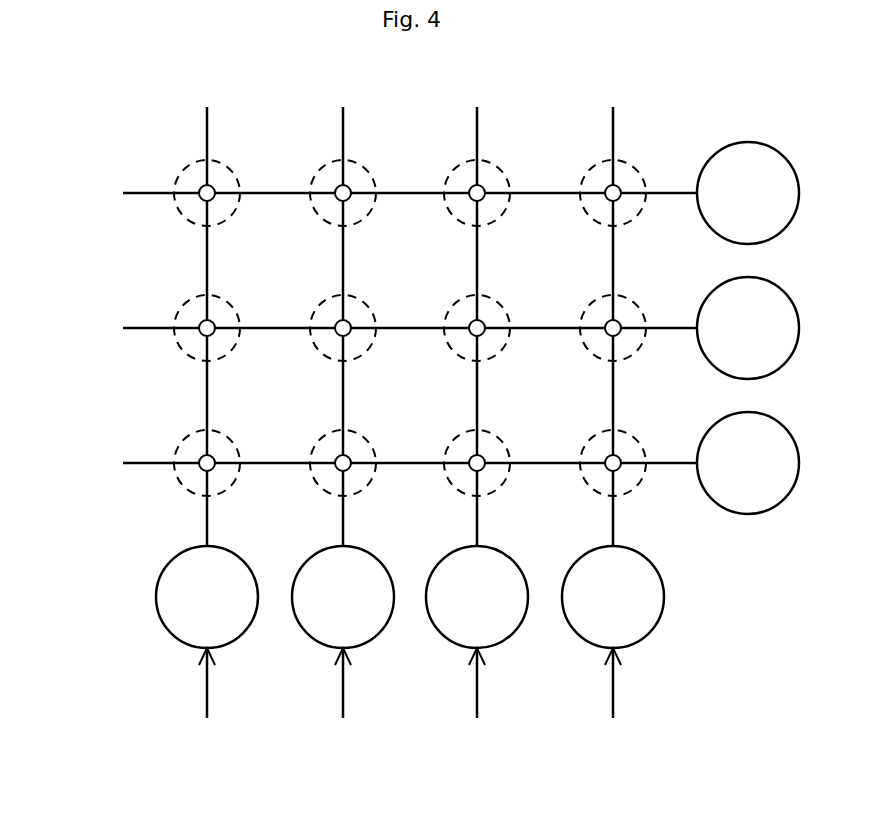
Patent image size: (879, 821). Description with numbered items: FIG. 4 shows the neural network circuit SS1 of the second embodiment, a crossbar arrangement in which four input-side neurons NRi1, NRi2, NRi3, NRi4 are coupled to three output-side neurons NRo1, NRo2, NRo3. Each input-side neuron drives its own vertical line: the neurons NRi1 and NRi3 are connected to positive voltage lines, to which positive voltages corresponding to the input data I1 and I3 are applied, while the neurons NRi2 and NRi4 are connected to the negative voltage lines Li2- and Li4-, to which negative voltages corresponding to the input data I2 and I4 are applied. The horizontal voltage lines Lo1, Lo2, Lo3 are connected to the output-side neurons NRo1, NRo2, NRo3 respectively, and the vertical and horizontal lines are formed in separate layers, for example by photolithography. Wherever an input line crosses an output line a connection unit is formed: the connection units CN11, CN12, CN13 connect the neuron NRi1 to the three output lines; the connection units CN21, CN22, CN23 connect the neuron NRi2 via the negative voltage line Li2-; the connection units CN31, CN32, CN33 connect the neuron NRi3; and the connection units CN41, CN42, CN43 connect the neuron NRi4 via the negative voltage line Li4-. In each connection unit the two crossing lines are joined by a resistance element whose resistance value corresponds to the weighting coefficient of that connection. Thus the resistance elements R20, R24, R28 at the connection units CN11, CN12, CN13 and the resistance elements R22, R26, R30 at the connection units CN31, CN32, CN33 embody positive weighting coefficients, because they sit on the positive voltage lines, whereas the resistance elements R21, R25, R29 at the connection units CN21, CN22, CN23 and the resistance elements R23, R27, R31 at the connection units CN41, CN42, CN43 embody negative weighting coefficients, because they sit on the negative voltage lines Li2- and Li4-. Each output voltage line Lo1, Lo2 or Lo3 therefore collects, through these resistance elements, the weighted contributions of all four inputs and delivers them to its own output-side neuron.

The negative voltage line Li2- is at (343, 137).
The negative voltage line Li4- is at (613, 137).
The voltage line Lo1 is at (123, 191).
The voltage line Lo2 is at (123, 326).
The voltage line Lo3 is at (123, 461).
The connection unit CN11 is at (184, 216).
The connection unit CN21 is at (320, 216).
The connection unit CN31 is at (454, 216).
The connection unit CN41 is at (636, 216).
The connection unit CN12 is at (184, 351).
The connection unit CN22 is at (320, 351).
The connection unit CN32 is at (454, 351).
The connection unit CN42 is at (636, 351).
The connection unit CN13 is at (184, 486).
The connection unit CN23 is at (320, 486).
The connection unit CN33 is at (454, 486).
The connection unit CN43 is at (636, 486).
The resistance element R20 is at (204, 190).
The resistance element R21 is at (340, 190).
The resistance element R22 is at (475, 190).
The resistance element R23 is at (615, 190).
The resistance element R24 is at (205, 325).
The resistance element R25 is at (347, 326).
The resistance element R26 is at (480, 326).
The resistance element R27 is at (616, 326).
The resistance element R28 is at (210, 460).
The resistance element R29 is at (347, 461).
The resistance element R30 is at (480, 461).
The resistance element R31 is at (611, 468).
The output-side neuron NRo1 is at (727, 205).
The output-side neuron NRo2 is at (727, 340).
The output-side neuron NRo3 is at (727, 475).
The input-side neuron NRi1 is at (189, 609).
The input-side neuron NRi2 is at (325, 609).
The input-side neuron NRi3 is at (459, 609).
The input-side neuron NRi4 is at (595, 609).
The input data I1 is at (207, 700).
The input data I2 is at (343, 700).
The input data I3 is at (477, 700).
The input data I4 is at (613, 700).
The neural network circuit SS1 is at (478, 794).